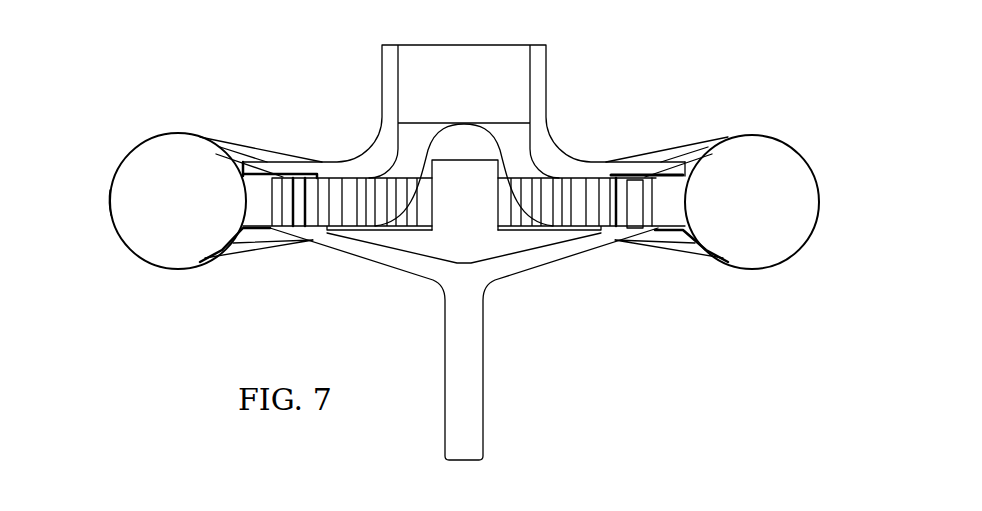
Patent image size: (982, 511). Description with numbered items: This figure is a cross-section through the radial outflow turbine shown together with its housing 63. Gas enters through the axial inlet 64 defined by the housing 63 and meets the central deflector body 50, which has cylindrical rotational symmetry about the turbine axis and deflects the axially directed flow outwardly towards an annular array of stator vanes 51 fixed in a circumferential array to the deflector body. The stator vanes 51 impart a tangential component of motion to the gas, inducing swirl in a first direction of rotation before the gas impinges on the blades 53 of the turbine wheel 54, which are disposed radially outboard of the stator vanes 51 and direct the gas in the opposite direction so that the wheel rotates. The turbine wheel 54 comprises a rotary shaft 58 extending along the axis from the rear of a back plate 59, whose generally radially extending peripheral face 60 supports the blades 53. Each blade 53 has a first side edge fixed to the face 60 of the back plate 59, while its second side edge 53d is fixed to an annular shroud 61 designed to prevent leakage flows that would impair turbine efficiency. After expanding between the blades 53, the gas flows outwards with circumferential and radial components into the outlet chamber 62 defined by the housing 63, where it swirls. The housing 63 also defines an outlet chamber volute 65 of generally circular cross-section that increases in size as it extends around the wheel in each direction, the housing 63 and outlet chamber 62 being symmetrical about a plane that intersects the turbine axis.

The deflector body 50 is at (424, 146).
The stator vanes 51 is at (537, 193).
The blades 53 is at (633, 218).
The second side edge 53d is at (637, 177).
The turbine wheel 54 is at (305, 220).
The rotary shaft 58 is at (470, 388).
The back plate 59 is at (582, 247).
The peripheral face 60 is at (647, 227).
The annular shroud 61 is at (296, 182).
The outlet chamber 62 is at (170, 162).
The housing 63 is at (108, 205).
The axial inlet 64 is at (540, 67).
The outlet chamber volute 65 is at (787, 218).